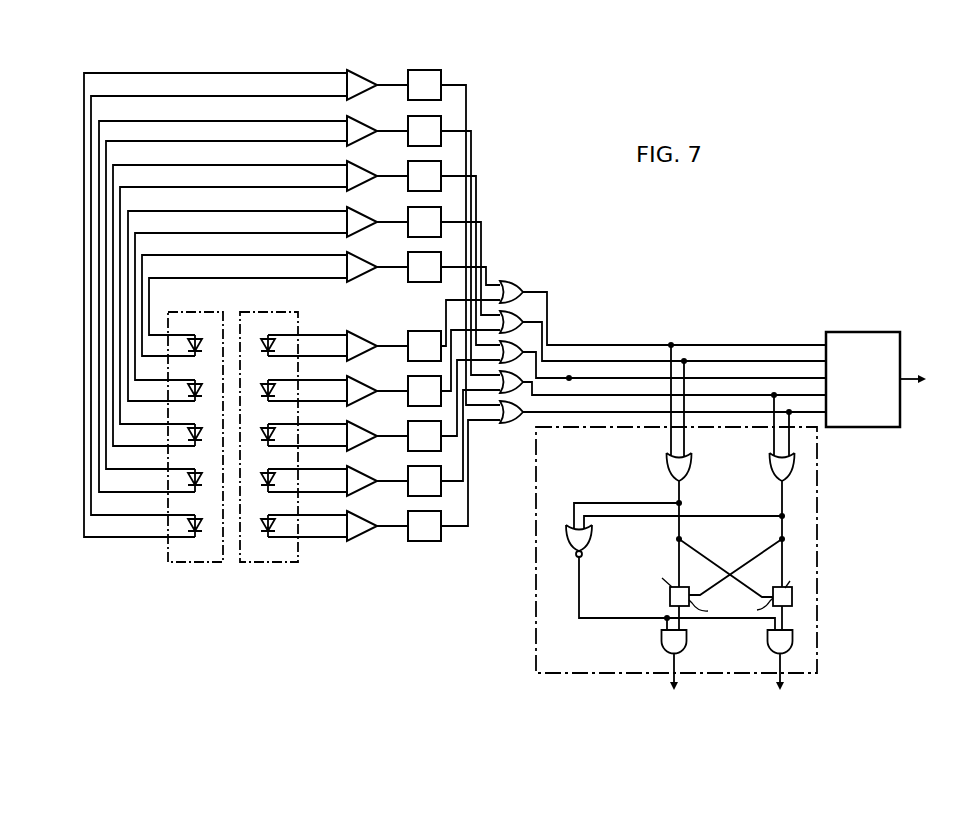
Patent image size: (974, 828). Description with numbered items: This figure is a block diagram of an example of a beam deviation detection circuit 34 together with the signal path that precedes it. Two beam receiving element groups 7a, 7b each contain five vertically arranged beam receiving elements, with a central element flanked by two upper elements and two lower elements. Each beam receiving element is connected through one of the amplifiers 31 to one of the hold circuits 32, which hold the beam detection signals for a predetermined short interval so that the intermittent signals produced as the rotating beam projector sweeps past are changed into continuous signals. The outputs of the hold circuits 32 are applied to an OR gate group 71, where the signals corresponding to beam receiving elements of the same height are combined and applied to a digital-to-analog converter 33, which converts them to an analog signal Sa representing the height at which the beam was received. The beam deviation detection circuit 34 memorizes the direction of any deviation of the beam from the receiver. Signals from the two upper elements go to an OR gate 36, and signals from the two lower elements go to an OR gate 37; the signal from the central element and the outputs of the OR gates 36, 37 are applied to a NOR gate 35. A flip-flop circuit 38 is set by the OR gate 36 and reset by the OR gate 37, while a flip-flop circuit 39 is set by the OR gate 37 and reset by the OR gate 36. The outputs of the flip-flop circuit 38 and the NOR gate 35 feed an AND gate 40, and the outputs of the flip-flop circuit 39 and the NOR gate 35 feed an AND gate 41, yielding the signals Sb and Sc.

The beam receiving element group 7a is at (208, 312).
The beam receiving element group 7b is at (283, 312).
The amplifiers 31 is at (369, 71).
The hold circuits 32 is at (430, 72).
The digital-to-analog converter 33 is at (860, 331).
The beam deviation detection circuit 34 is at (819, 489).
The NOR gate 35 is at (592, 531).
The OR gate 36 is at (692, 460).
The OR gate 37 is at (771, 470).
The flip-flop circuit 38 is at (690, 588).
The flip-flop circuit 39 is at (774, 589).
The AND gate 40 is at (688, 640).
The AND gate 41 is at (767, 641).
The OR gate group 71 is at (504, 270).